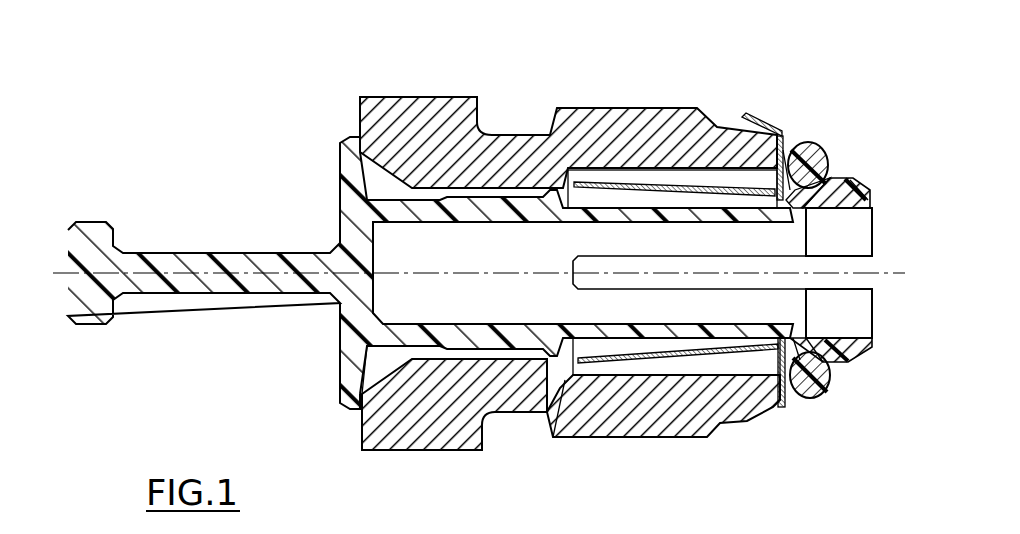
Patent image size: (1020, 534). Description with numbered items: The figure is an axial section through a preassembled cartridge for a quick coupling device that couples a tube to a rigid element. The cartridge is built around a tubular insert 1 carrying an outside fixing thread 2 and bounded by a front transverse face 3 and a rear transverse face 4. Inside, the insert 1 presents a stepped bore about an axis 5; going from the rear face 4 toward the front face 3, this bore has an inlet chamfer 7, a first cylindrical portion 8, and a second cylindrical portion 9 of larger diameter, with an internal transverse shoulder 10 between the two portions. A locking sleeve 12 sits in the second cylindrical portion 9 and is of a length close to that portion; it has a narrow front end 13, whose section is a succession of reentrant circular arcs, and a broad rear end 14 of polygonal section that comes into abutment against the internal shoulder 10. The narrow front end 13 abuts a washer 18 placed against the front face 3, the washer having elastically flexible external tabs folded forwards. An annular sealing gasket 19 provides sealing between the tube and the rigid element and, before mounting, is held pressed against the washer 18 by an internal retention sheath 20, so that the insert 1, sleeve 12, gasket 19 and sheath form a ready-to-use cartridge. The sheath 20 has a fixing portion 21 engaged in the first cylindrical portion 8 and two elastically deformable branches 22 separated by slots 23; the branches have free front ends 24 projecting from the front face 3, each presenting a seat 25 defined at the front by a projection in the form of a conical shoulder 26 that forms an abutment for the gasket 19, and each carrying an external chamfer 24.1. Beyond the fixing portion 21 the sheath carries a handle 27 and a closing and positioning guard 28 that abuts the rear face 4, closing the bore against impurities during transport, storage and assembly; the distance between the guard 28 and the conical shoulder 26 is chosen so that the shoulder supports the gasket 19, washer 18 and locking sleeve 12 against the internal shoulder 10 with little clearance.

The tubular insert 1 is at (585, 93).
The outside fixing thread 2 is at (712, 108).
The front transverse face 3 is at (784, 150).
The rear transverse face 4 is at (358, 112).
The axis 5 is at (897, 270).
The inlet chamfer 7 is at (383, 372).
The first cylindrical portion 8 is at (467, 360).
The second cylindrical portion 9 is at (656, 372).
The internal transverse shoulder 10 is at (573, 376).
The locking sleeve 12 is at (750, 362).
The narrow front end 13 is at (838, 340).
The broad rear end 14 is at (563, 383).
The washer 18 is at (822, 388).
The annular sealing gasket 19 is at (815, 402).
The internal retention sheath 20 is at (292, 318).
The fixing portion 21 is at (497, 200).
The elastically deformable branches 22 is at (724, 332).
The slots 23 is at (843, 280).
The free front ends 24 is at (858, 180).
The external chamfers 24.1 is at (850, 176).
The seats 25 is at (815, 148).
The conical shoulder 26 is at (832, 176).
The handle 27 is at (158, 262).
The closing and positioning guard 28 is at (345, 198).